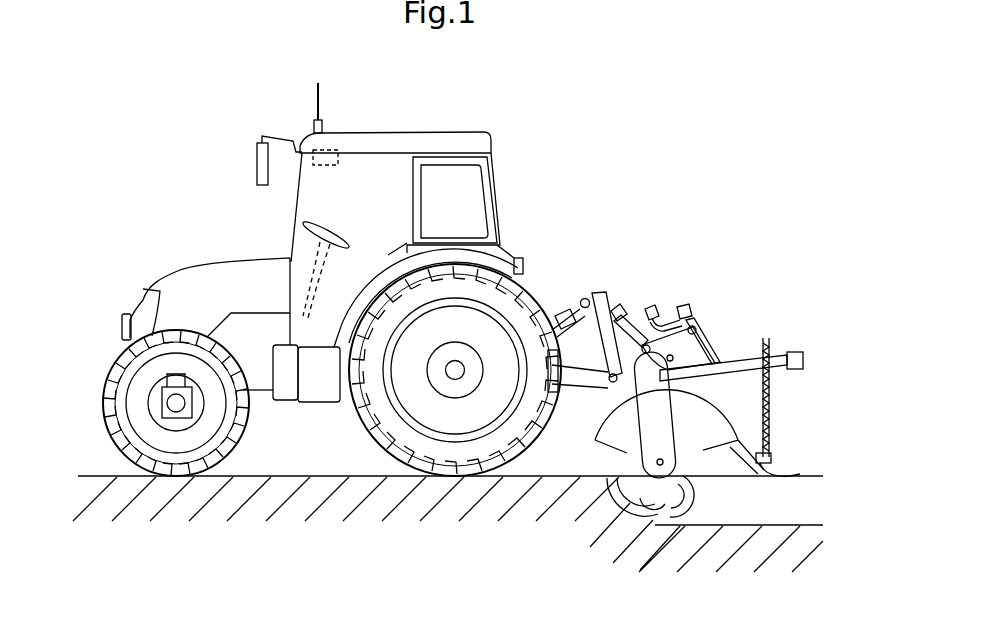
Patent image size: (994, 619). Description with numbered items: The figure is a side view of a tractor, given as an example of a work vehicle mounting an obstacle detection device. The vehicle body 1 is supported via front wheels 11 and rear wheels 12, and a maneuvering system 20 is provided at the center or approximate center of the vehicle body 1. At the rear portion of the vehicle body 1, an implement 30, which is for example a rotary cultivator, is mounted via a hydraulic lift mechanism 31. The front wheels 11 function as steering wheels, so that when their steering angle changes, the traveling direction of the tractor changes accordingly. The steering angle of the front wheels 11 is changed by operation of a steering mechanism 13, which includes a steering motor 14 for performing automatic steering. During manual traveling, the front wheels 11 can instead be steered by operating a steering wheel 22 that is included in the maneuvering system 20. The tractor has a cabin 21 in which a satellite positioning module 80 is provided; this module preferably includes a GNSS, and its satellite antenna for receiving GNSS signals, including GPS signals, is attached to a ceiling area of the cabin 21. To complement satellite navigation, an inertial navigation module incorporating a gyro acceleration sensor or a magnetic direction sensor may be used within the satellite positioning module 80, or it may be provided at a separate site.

The vehicle body 1 is at (295, 413).
The front wheels 11 is at (172, 478).
The rear wheels 12 is at (462, 478).
The steering mechanism 13 is at (158, 400).
The steering motor 14 is at (148, 380).
The maneuvering system 20 is at (352, 222).
The cabin 21 is at (495, 142).
The steering wheel 22 is at (322, 243).
The implement 30 is at (662, 512).
The hydraulic lift mechanism 31 is at (617, 290).
The satellite positioning module 80 is at (329, 130).